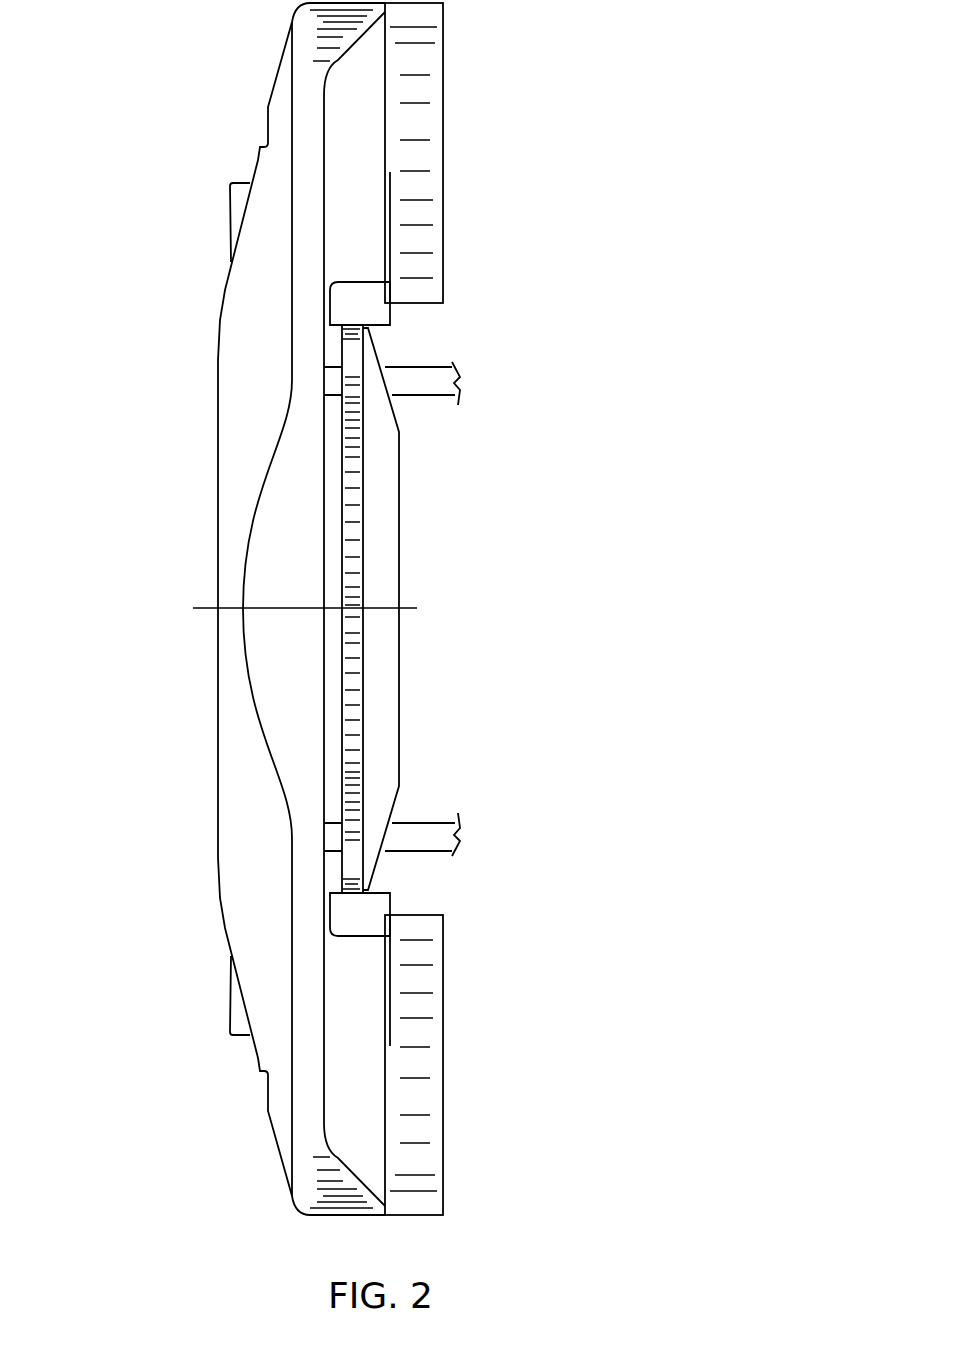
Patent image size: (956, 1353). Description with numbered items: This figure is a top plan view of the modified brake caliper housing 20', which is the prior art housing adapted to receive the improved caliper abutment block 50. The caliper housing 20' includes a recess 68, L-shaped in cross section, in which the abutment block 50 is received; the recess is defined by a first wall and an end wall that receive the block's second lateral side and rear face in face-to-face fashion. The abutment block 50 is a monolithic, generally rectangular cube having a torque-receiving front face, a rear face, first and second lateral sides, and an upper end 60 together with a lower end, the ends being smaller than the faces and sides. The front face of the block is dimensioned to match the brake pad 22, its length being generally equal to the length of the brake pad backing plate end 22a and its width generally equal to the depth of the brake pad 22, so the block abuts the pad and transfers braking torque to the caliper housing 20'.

The caliper housing 20' is at (396, 609).
The brake pad 22 is at (387, 577).
The brake pad backing plate end 22a is at (347, 335).
The caliper abutment block 50 is at (418, 324).
The upper end 60 is at (373, 295).
The recess 68 is at (292, 289).